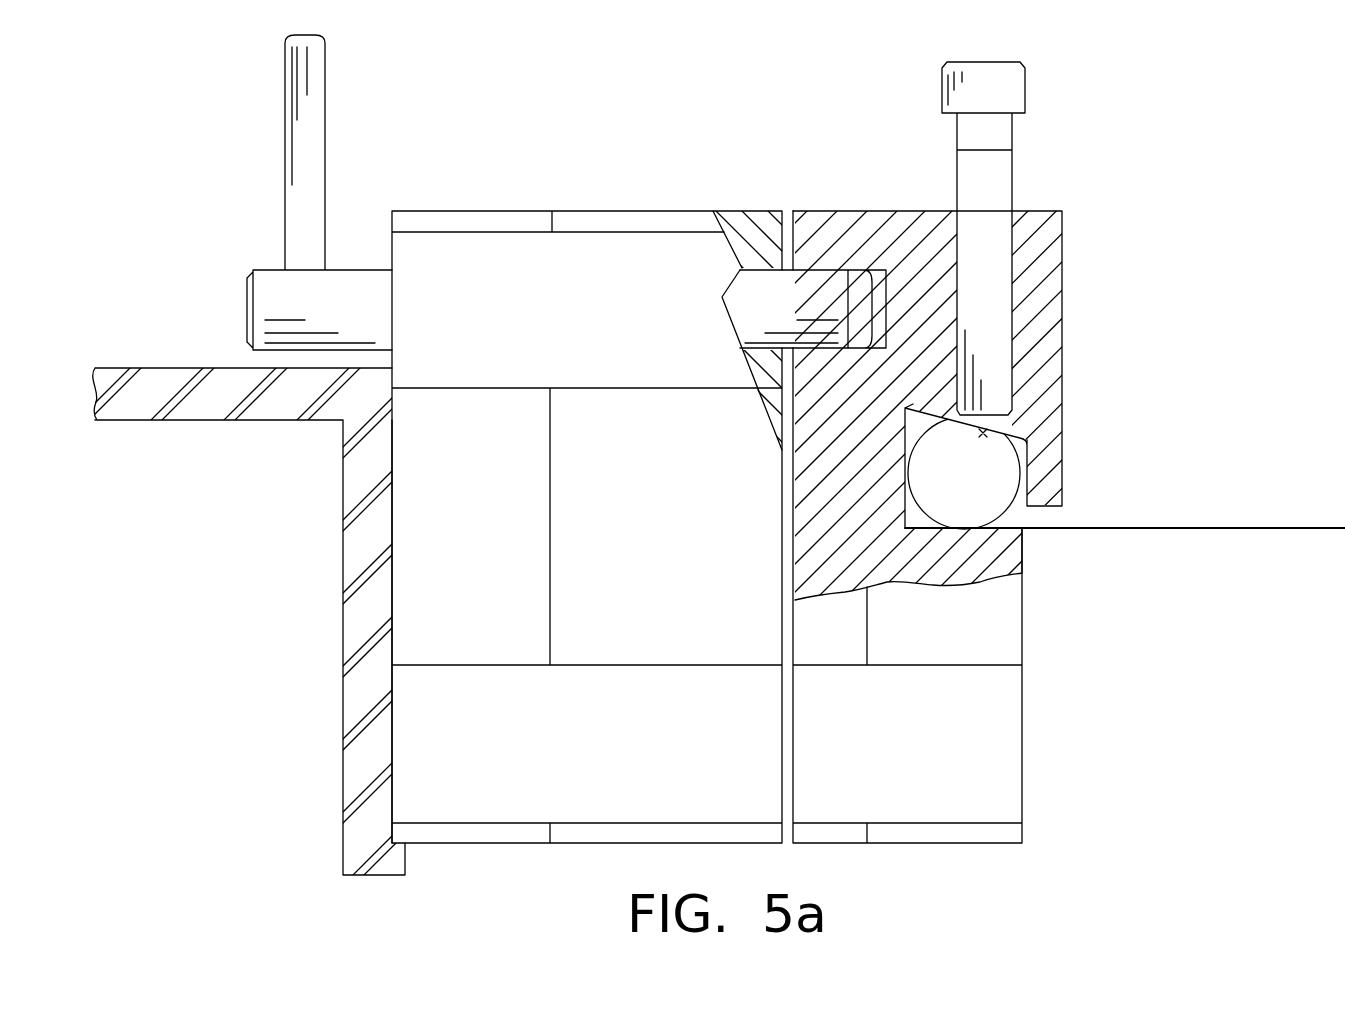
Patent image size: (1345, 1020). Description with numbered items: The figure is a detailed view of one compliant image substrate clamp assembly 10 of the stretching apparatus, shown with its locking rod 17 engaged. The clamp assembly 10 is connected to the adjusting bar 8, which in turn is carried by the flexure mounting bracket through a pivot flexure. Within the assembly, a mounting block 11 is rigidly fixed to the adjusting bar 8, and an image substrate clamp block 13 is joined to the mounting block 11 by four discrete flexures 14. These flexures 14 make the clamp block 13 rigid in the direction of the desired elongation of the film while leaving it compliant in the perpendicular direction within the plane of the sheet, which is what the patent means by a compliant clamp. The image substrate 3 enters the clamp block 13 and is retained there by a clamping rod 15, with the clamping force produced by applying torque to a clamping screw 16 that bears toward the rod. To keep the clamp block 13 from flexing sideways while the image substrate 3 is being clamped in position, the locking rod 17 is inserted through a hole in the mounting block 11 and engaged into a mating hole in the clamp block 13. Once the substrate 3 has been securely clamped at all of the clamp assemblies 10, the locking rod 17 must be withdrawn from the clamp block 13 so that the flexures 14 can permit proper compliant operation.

The image substrate 3 is at (1302, 528).
The adjusting bar 8 is at (222, 420).
The compliant image substrate clamp assembly 10 is at (662, 128).
The mounting block 11 is at (758, 211).
The image substrate clamp block 13 is at (820, 211).
The flexures 14 is at (502, 238).
The clamping rod 15 is at (1026, 472).
The clamping screw 16 is at (1013, 128).
The locking rod 17 is at (247, 312).